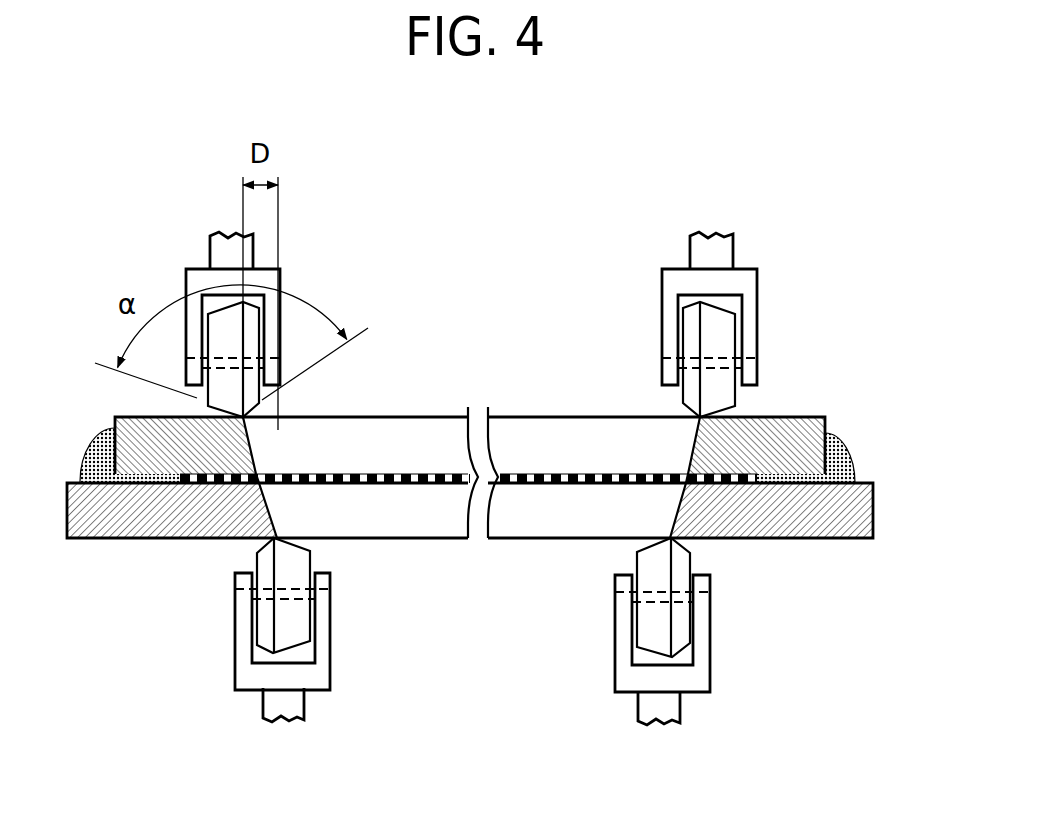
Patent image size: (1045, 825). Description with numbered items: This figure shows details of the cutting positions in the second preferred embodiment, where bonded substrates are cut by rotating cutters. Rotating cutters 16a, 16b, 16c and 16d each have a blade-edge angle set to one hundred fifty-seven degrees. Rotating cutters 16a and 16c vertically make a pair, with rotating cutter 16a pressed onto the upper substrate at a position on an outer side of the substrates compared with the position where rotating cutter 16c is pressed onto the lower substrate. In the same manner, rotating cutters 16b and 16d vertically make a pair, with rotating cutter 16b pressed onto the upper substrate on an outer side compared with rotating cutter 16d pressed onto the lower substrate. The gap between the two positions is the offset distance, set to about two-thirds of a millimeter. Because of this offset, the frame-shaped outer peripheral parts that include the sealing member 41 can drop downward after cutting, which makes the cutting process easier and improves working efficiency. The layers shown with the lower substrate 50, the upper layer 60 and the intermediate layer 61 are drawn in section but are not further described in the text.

The rotating cutter 16a is at (232, 330).
The rotating cutter 16b is at (720, 337).
The rotating cutter 16c is at (292, 623).
The rotating cutter 16d is at (650, 623).
The sealing member 41 is at (850, 447).
The substrate 50 is at (787, 513).
The cover layer 60 is at (790, 432).
The metal foil layer 61 is at (398, 472).